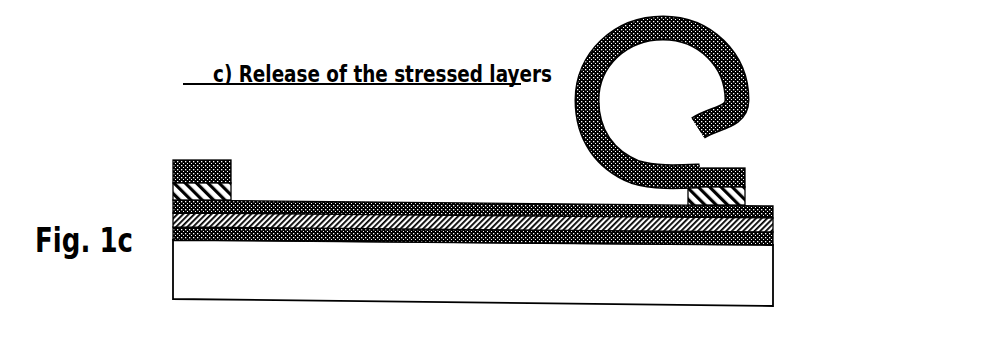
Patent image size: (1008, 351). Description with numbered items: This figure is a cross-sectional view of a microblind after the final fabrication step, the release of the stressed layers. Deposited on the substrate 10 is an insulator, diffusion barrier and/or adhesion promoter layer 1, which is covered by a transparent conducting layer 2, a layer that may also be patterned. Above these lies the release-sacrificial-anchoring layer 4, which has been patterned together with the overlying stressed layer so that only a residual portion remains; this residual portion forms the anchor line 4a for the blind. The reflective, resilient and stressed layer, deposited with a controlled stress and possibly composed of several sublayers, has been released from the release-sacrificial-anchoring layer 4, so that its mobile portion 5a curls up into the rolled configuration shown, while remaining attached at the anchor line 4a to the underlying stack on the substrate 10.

The substrate 10 is at (745, 282).
The insulator, diffusion barrier and/or adhesion promoter layer 1 is at (775, 228).
The transparent conducting layer 2 is at (775, 212).
The release-sacrificial-anchoring layer 4 is at (705, 110).
The anchor line 4a is at (758, 172).
The mobile portion of the stressed layer 5a is at (750, 58).